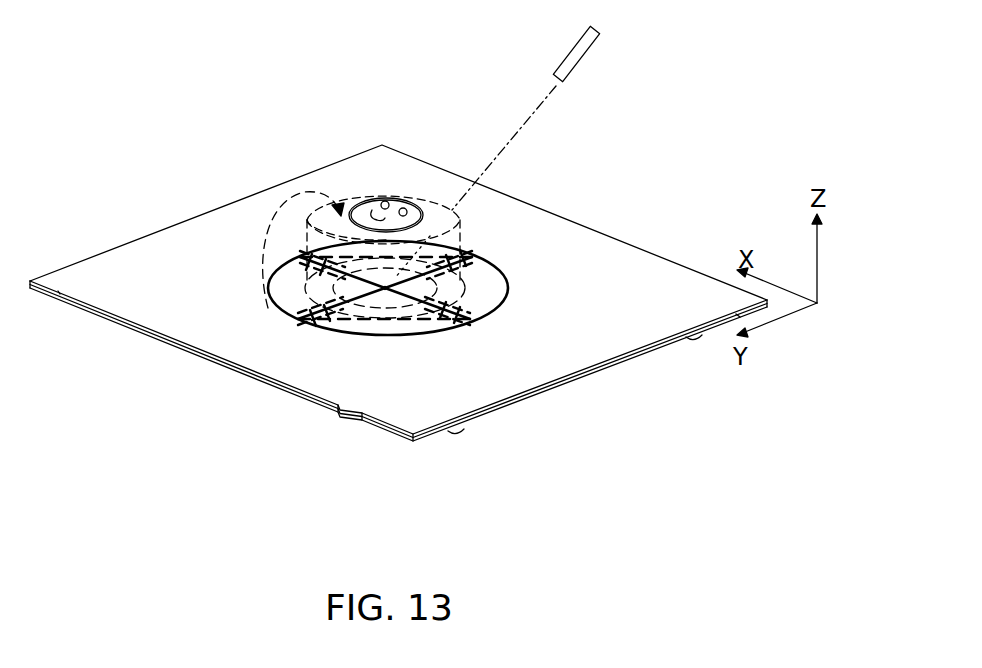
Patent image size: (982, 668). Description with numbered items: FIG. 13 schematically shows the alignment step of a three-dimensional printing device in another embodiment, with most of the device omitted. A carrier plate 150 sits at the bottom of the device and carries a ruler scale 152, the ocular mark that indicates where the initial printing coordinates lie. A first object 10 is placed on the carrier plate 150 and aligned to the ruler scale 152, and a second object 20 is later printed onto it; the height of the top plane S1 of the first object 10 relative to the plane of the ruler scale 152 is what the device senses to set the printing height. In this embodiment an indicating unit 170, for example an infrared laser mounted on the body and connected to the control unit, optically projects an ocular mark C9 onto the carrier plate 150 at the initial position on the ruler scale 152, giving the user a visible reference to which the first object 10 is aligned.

The carrier plate 150 is at (165, 312).
The ruler scale 152 is at (322, 326).
The second object 20 is at (343, 223).
The first object 10 is at (350, 325).
The ocular mark C9 is at (385, 290).
The top plane S1 is at (283, 252).
The indicating unit 170 is at (602, 58).